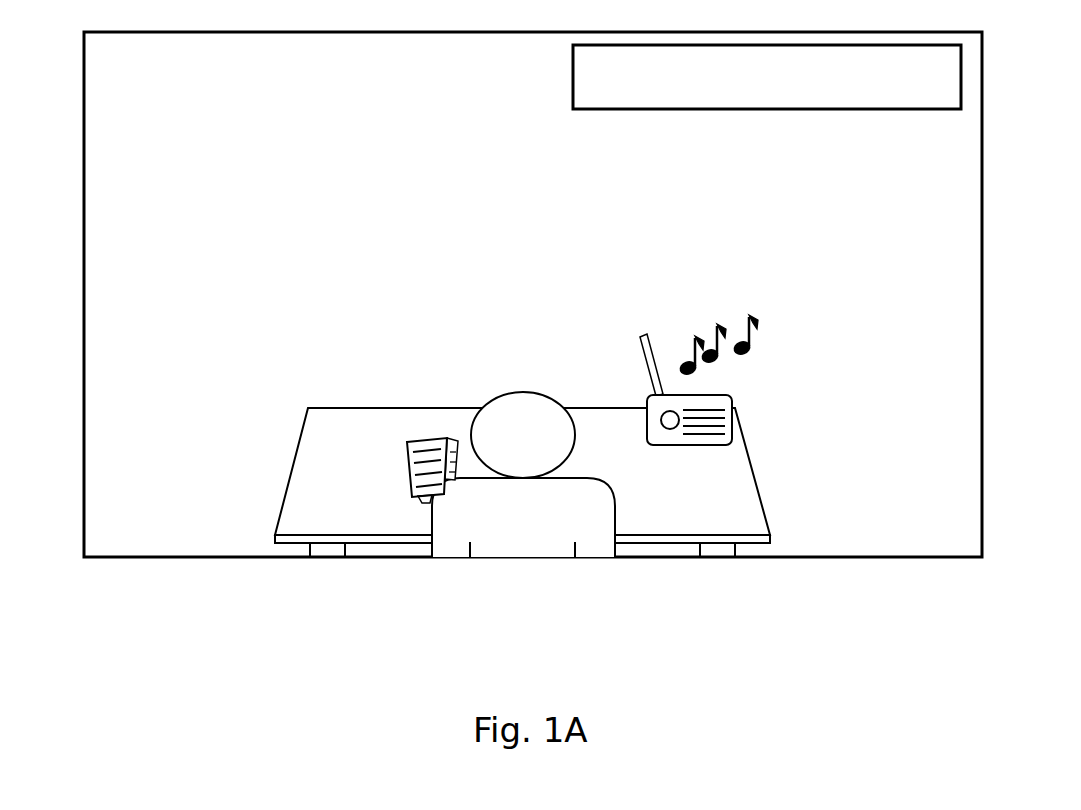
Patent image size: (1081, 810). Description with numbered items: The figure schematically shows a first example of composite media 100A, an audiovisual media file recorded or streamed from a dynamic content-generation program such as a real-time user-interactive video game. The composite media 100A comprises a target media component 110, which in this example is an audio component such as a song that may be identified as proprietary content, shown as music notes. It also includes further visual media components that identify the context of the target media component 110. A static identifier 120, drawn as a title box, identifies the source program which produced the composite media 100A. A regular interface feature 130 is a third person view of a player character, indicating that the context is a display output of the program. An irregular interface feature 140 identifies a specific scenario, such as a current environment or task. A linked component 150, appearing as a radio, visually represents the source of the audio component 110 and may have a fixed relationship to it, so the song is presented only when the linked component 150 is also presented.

The composite media 100A is at (172, 558).
The target media component 110 is at (717, 375).
The identifier 120 is at (895, 110).
The regular interface feature 130 is at (505, 537).
The irregular interface feature 140 is at (420, 503).
The linked component 150 is at (675, 435).